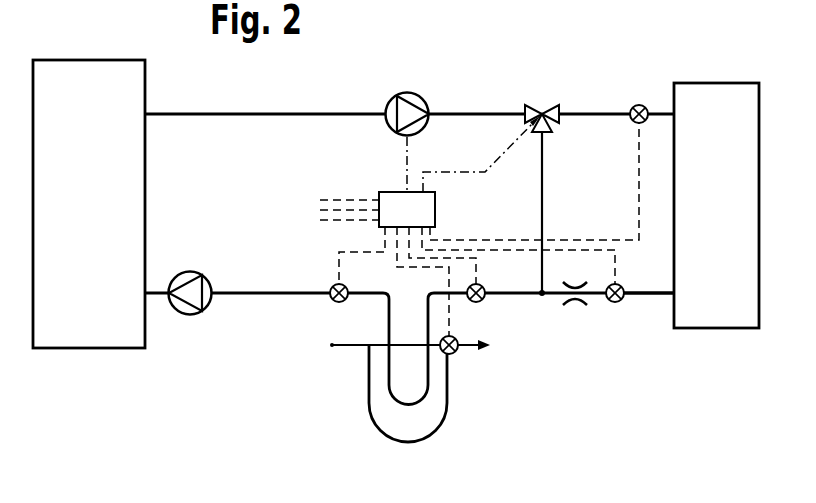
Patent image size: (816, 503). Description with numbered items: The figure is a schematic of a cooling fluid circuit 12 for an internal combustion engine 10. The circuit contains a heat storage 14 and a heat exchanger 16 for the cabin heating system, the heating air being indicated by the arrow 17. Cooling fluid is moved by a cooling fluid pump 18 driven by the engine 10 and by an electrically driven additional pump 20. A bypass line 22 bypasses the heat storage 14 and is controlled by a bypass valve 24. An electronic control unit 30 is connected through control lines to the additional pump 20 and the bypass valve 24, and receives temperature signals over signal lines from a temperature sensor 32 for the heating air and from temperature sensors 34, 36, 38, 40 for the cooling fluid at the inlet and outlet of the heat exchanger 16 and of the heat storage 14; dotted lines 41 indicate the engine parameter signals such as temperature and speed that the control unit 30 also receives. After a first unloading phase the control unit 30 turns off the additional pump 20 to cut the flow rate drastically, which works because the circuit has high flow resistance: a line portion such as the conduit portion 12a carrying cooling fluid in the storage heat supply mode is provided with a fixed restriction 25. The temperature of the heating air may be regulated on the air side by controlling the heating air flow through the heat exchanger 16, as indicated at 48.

The internal combustion engine 10 is at (103, 349).
The cooling fluid circuit 12 is at (463, 108).
The conduit portion 12a is at (655, 295).
The heat storage 14 is at (736, 83).
The heat exchanger 16 is at (406, 407).
The arrow indicating heating air 17 is at (349, 345).
The cooling fluid pump 18 is at (190, 315).
The additional pump 20 is at (390, 107).
The bypass line 22 is at (545, 182).
The bypass valve 24 is at (545, 104).
The fixed restriction 25 is at (577, 303).
The electronic control unit 30 is at (436, 208).
The temperature sensor 32 is at (456, 352).
The temperature sensor 34 is at (480, 302).
The temperature sensor 36 is at (339, 302).
The temperature sensor 38 is at (637, 105).
The temperature sensor 40 is at (613, 303).
The dotted lines 41 is at (341, 200).
The heater control on the air side 48 is at (447, 400).